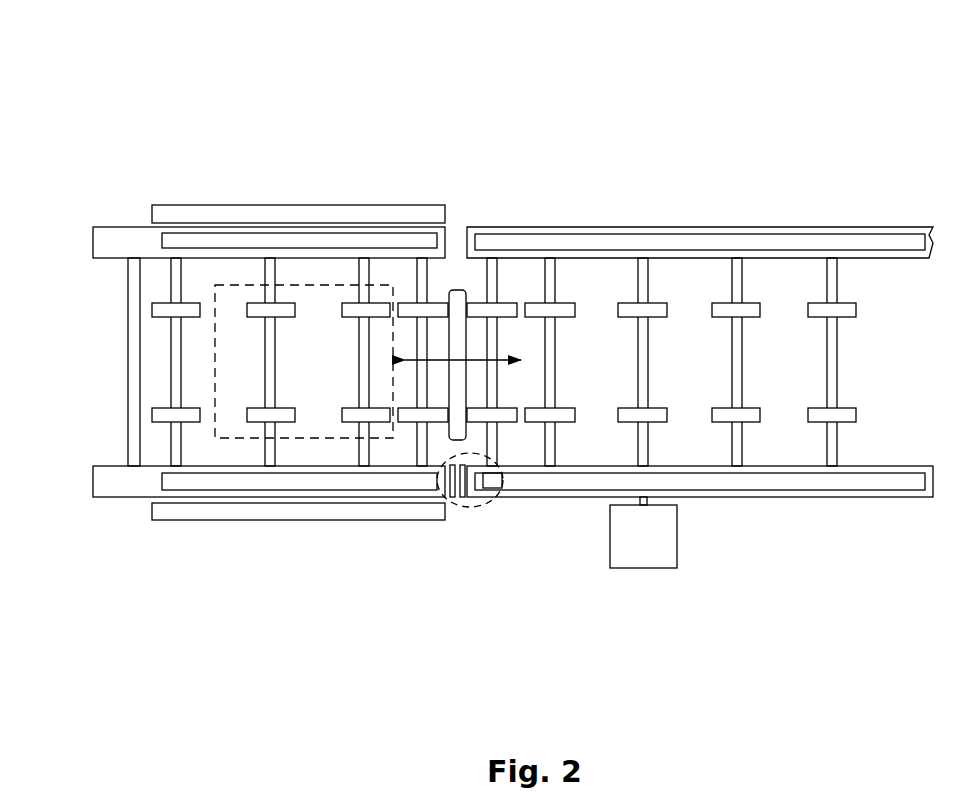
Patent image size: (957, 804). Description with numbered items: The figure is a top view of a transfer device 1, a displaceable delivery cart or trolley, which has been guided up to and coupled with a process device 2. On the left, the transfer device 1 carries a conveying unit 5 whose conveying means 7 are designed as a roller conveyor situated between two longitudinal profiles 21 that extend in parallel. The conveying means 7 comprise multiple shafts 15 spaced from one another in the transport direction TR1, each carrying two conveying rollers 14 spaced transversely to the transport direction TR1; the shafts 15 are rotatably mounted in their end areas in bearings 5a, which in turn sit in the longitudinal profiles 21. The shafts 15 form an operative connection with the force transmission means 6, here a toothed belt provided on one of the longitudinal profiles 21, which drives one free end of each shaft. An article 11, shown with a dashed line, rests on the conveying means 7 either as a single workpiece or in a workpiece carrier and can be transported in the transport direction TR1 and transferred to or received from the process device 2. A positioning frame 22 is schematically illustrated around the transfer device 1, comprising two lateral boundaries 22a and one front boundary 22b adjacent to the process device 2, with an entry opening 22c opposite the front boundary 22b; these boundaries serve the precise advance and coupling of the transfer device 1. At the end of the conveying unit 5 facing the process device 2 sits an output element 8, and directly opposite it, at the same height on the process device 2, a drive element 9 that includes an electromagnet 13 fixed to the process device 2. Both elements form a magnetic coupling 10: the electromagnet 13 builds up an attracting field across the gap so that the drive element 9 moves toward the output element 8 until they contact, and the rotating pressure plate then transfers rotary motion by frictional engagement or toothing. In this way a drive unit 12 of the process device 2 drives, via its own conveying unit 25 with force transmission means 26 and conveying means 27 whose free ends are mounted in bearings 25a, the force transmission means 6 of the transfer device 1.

The transfer device 1 is at (274, 165).
The process device 2 is at (735, 170).
The conveying unit 5 is at (298, 397).
The bearings 5a is at (205, 373).
The force transmission means 6 is at (298, 573).
The conveying means 7 is at (332, 394).
The output element 8 is at (452, 500).
The drive element 9 is at (468, 500).
The magnetic coupling 10 is at (500, 490).
The article 11 is at (304, 265).
The drive unit 12 is at (660, 598).
The electromagnet 13 is at (503, 492).
The conveying rollers 14 is at (361, 468).
The shafts 15 is at (352, 348).
The longitudinal profiles 21 is at (269, 367).
The positioning frame 22 is at (397, 200).
The lateral boundaries 22a is at (304, 380).
The front boundary 22b is at (473, 274).
The entry opening 22c is at (104, 359).
The conveying unit 25 is at (801, 520).
The bearings 25a is at (700, 346).
The force transmission means 26 is at (754, 456).
The conveying means 27 is at (849, 455).
The transport direction TR1 is at (523, 360).